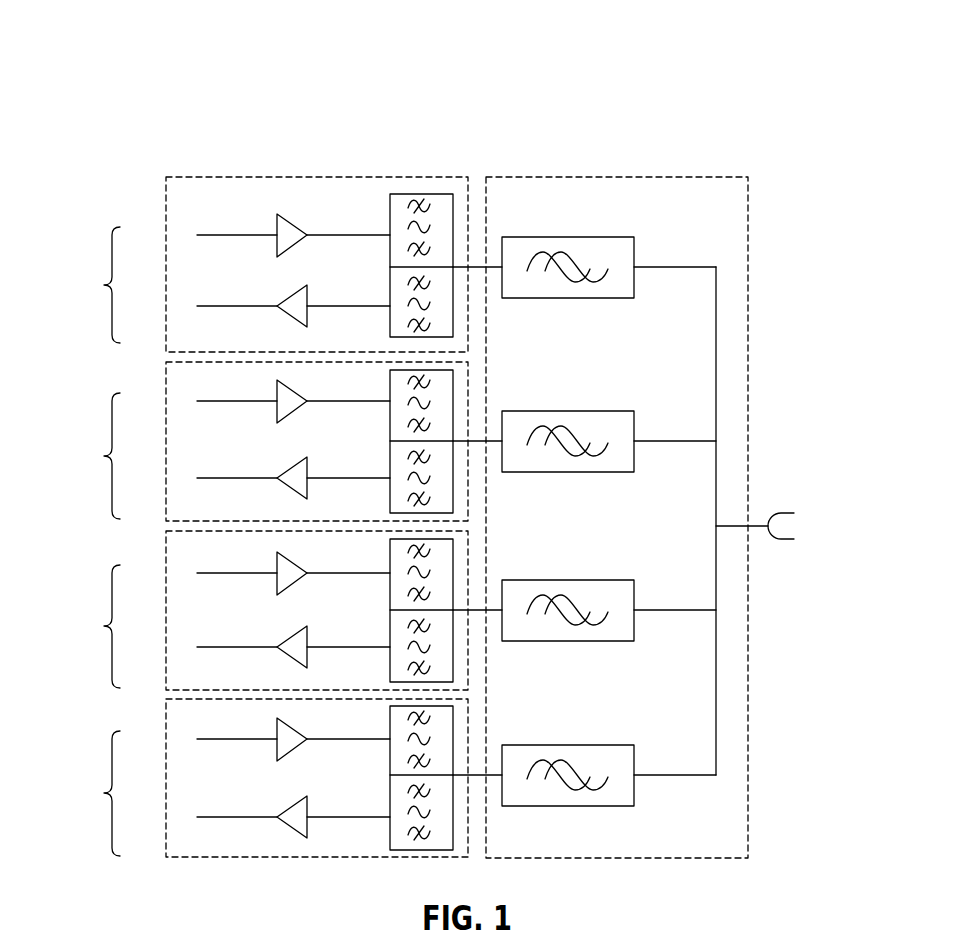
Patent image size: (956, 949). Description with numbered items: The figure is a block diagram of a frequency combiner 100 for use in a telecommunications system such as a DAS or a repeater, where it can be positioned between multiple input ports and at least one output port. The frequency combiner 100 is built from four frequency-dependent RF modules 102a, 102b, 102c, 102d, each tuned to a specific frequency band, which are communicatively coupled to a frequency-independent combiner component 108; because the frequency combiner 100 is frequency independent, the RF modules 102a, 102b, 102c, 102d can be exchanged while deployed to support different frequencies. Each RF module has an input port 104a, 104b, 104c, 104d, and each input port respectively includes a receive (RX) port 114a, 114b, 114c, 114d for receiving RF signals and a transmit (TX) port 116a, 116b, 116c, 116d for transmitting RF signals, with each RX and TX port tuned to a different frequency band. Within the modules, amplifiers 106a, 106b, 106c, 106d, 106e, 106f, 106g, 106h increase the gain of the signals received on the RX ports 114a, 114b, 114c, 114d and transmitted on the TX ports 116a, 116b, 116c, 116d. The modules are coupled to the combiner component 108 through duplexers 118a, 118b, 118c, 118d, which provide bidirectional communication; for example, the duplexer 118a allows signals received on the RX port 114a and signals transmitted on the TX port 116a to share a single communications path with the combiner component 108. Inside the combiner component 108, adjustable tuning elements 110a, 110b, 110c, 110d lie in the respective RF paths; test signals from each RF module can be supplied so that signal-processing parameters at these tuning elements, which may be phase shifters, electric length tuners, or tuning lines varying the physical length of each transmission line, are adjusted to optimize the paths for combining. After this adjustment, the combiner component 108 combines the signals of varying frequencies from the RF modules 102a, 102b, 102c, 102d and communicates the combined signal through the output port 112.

The frequency combiner 100 is at (431, 465).
The RF module 102a is at (287, 175).
The RF module 102b is at (325, 362).
The RF module 102c is at (338, 690).
The RF module 102d is at (305, 860).
The input port 104a is at (87, 285).
The input port 104b is at (87, 456).
The input port 104c is at (87, 626).
The input port 104d is at (87, 793).
The amplifier 106a is at (277, 244).
The amplifier 106b is at (283, 310).
The amplifier 106c is at (277, 410).
The amplifier 106d is at (283, 482).
The amplifier 106e is at (277, 582).
The amplifier 106f is at (283, 651).
The amplifier 106g is at (277, 748).
The amplifier 106h is at (283, 821).
The combiner component 108 is at (608, 860).
The adjustable tuning element 110a is at (634, 255).
The adjustable tuning element 110b is at (634, 429).
The adjustable tuning element 110c is at (634, 598).
The adjustable tuning element 110d is at (634, 763).
The output port 112 is at (781, 513).
The receive (RX) port 114a is at (197, 235).
The receive (RX) port 114b is at (197, 401).
The receive (RX) port 114c is at (197, 573).
The receive (RX) port 114d is at (197, 739).
The transmit (TX) port 116a is at (197, 306).
The transmit (TX) port 116b is at (197, 478).
The transmit (TX) port 116c is at (197, 647).
The transmit (TX) port 116d is at (197, 817).
The duplexer 118a is at (427, 194).
The duplexer 118b is at (427, 370).
The duplexer 118c is at (427, 539).
The duplexer 118d is at (427, 706).